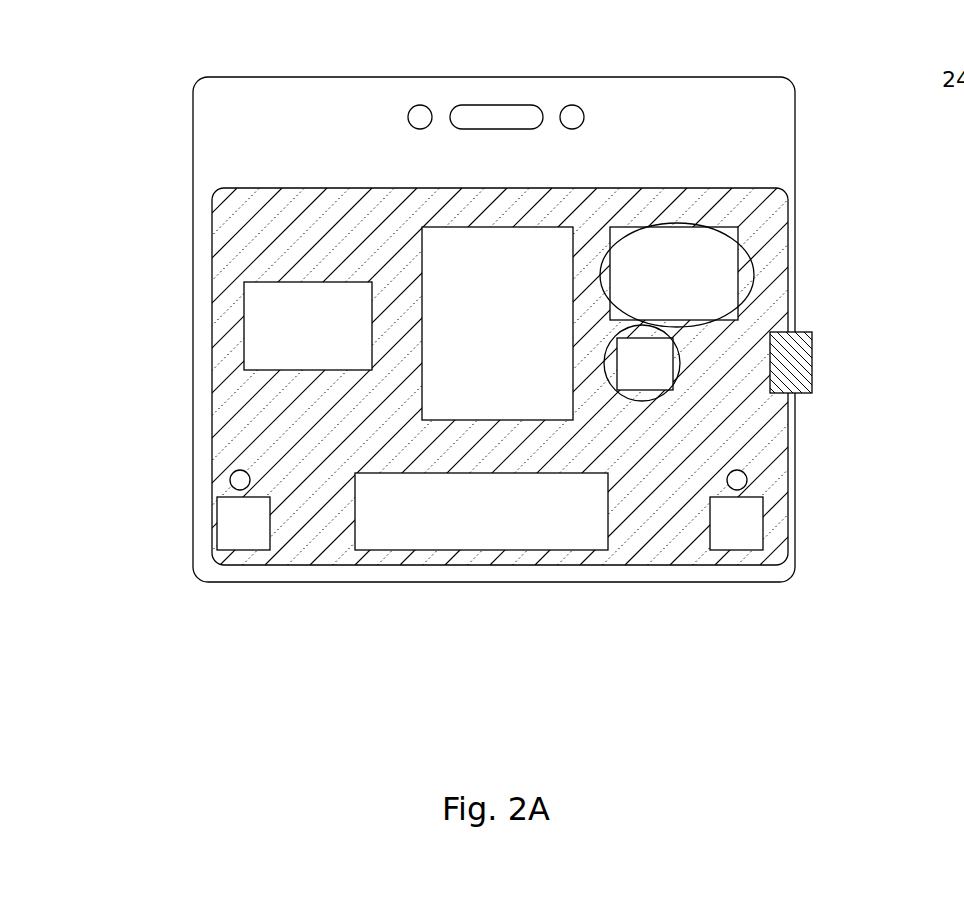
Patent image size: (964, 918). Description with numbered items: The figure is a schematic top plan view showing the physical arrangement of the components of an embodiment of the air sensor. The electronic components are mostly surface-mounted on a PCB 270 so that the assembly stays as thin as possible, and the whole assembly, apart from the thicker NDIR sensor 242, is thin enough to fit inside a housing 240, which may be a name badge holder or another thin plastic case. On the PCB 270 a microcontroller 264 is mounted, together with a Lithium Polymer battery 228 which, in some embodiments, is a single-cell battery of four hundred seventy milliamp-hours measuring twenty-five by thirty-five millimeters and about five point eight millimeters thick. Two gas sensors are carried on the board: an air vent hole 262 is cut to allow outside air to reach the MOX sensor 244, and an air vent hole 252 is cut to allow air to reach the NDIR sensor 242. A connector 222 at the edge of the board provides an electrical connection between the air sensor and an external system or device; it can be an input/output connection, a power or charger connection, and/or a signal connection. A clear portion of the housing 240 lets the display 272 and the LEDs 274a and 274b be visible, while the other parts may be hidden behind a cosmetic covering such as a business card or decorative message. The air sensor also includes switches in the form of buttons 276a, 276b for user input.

The housing 240 is at (193, 148).
The PCB 270 is at (205, 390).
The microcontroller 264 is at (244, 313).
The Lithium Polymer battery 228 is at (422, 273).
The NDIR sensor 242 is at (738, 273).
The air vent hole 252 is at (758, 233).
The MOX sensor 244 is at (678, 363).
The air vent hole 262 is at (648, 401).
The connector 222 is at (812, 375).
The display 272 is at (463, 552).
The LED 274a is at (230, 480).
The button 276a is at (217, 528).
The LED 274b is at (748, 478).
The button 276b is at (763, 523).